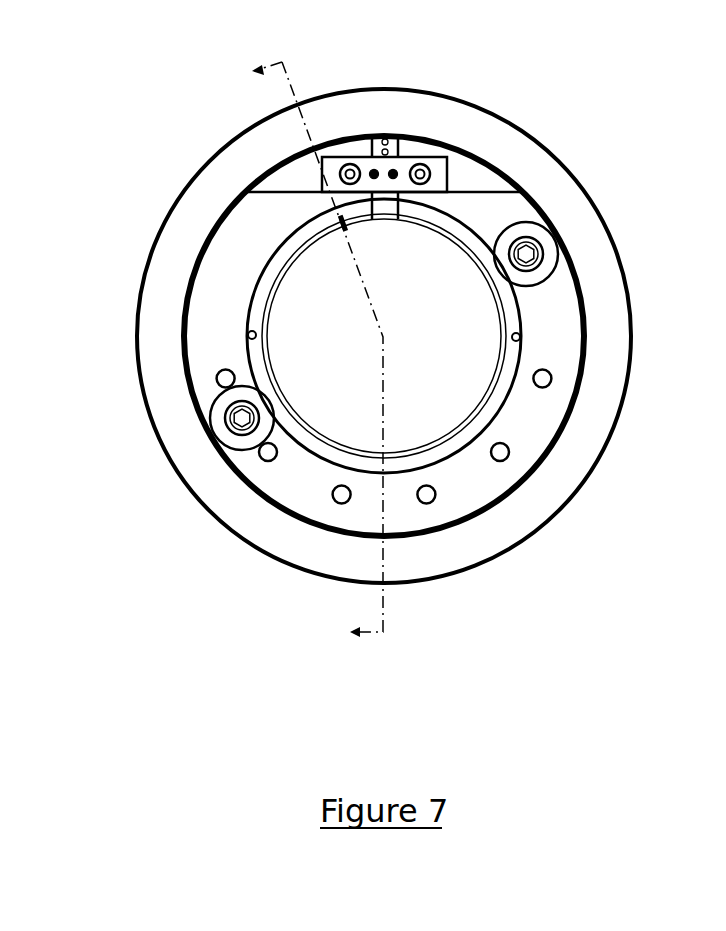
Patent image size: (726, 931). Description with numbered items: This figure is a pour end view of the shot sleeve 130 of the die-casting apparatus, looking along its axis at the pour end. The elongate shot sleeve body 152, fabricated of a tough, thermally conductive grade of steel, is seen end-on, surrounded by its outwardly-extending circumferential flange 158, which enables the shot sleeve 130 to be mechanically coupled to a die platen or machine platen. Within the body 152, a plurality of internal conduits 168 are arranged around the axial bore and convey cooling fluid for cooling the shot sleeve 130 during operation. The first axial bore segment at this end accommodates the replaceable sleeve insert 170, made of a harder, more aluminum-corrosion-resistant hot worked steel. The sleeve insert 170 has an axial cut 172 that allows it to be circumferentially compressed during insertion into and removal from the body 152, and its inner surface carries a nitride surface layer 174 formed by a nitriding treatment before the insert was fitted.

The shot sleeve 130 is at (568, 58).
The shot sleeve body 152 is at (567, 318).
The circumferential flange 158 is at (580, 203).
The internal conduits 168 is at (499, 472).
The sleeve insert 170 is at (503, 387).
The axial cut 172 is at (333, 218).
The nitride surface layer 174 is at (491, 370).